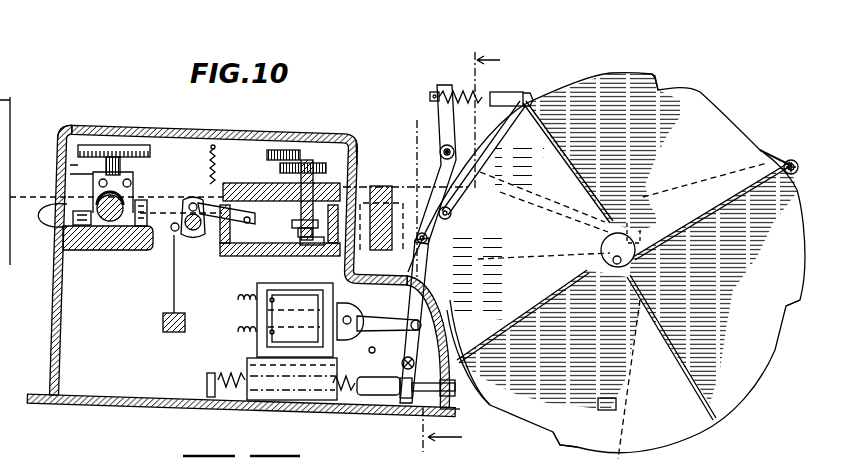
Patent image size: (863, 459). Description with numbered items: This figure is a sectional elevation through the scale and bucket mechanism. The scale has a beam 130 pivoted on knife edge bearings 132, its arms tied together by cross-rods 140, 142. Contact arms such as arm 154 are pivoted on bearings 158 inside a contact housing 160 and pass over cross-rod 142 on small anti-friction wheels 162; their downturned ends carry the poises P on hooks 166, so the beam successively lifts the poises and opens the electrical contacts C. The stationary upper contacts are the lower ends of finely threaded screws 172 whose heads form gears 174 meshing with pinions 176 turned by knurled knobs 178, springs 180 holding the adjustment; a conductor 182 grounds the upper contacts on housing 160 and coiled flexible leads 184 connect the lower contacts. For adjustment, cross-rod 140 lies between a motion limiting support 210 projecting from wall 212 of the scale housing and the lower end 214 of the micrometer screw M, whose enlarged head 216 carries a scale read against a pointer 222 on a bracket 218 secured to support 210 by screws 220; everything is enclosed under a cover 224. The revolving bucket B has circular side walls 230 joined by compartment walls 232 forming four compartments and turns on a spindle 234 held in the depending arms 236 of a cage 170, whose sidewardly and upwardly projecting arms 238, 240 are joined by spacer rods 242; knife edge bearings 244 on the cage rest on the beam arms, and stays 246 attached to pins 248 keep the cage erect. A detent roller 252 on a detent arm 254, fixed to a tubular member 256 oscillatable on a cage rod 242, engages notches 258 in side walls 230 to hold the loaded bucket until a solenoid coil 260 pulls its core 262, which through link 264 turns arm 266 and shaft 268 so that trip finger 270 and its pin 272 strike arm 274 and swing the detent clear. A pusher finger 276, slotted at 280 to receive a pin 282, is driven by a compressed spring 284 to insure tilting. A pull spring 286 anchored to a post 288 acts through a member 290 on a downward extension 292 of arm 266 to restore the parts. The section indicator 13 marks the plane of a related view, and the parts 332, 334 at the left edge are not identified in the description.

The section line 13 is at (476, 252).
The beam 130 is at (440, 152).
The knife edge bearings 132 is at (394, 200).
The cross-rod 140 is at (39, 212).
The cross-rod 142 is at (190, 236).
The contact arm 154 is at (248, 257).
The bearings 158 is at (258, 183).
The contact housing 160 is at (225, 257).
The anti-friction wheels 162 is at (207, 163).
The hooks 166 is at (172, 232).
The cage 170 is at (791, 153).
The finely threaded screws 172 is at (358, 152).
The gears 174 is at (308, 160).
The pinions 176 is at (270, 150).
The knurled knobs 178 is at (290, 162).
The springs 180 is at (294, 230).
The conductor 182 is at (213, 145).
The coiled flexible leads 184 is at (311, 247).
The motion limiting support 210 is at (120, 252).
The wall 212 is at (60, 300).
The lower end of micrometer screw 214 is at (86, 226).
The enlarged head 216 is at (87, 126).
The bracket 218 is at (128, 180).
The screws 220 is at (136, 198).
The indicating pointer 222 is at (72, 171).
The cover 224 is at (140, 126).
The side walls 230 is at (800, 258).
The compartment walls 232 is at (503, 320).
The spindle 234 is at (628, 290).
The depending arms 236 is at (622, 372).
The sidewardly projecting arm 238 is at (520, 160).
The upwardly projecting arm 240 is at (720, 180).
The spacer rods 242 is at (442, 146).
The knife edge bearings 244 is at (645, 196).
The links or stays 246 is at (480, 400).
The pins 248 is at (618, 409).
The detent roller 252 is at (451, 213).
The detent arm 254 is at (500, 203).
The tubular member 256 is at (492, 140).
The notches 258 is at (660, 89).
The solenoid coil 260 is at (300, 358).
The solenoid core 262 is at (347, 326).
The link 264 is at (402, 364).
The arm 266 is at (440, 328).
The shaft 268 is at (441, 411).
The trip finger 270 is at (425, 270).
The pin 272 is at (427, 239).
The arm 274 is at (455, 186).
The pusher finger 276 is at (530, 96).
The slot 280 is at (467, 100).
The pin 282 is at (430, 93).
The spring 284 is at (478, 93).
The pull spring 286 is at (243, 400).
The post 288 is at (187, 398).
The member 290 is at (373, 392).
The downward extension 292 is at (401, 405).
The edge 332 is at (24, 255).
The edge 334 is at (8, 148).
The bucket B is at (628, 263).
The electrical contact C is at (406, 172).
The micrometer screw M is at (78, 150).
The poises P is at (172, 335).